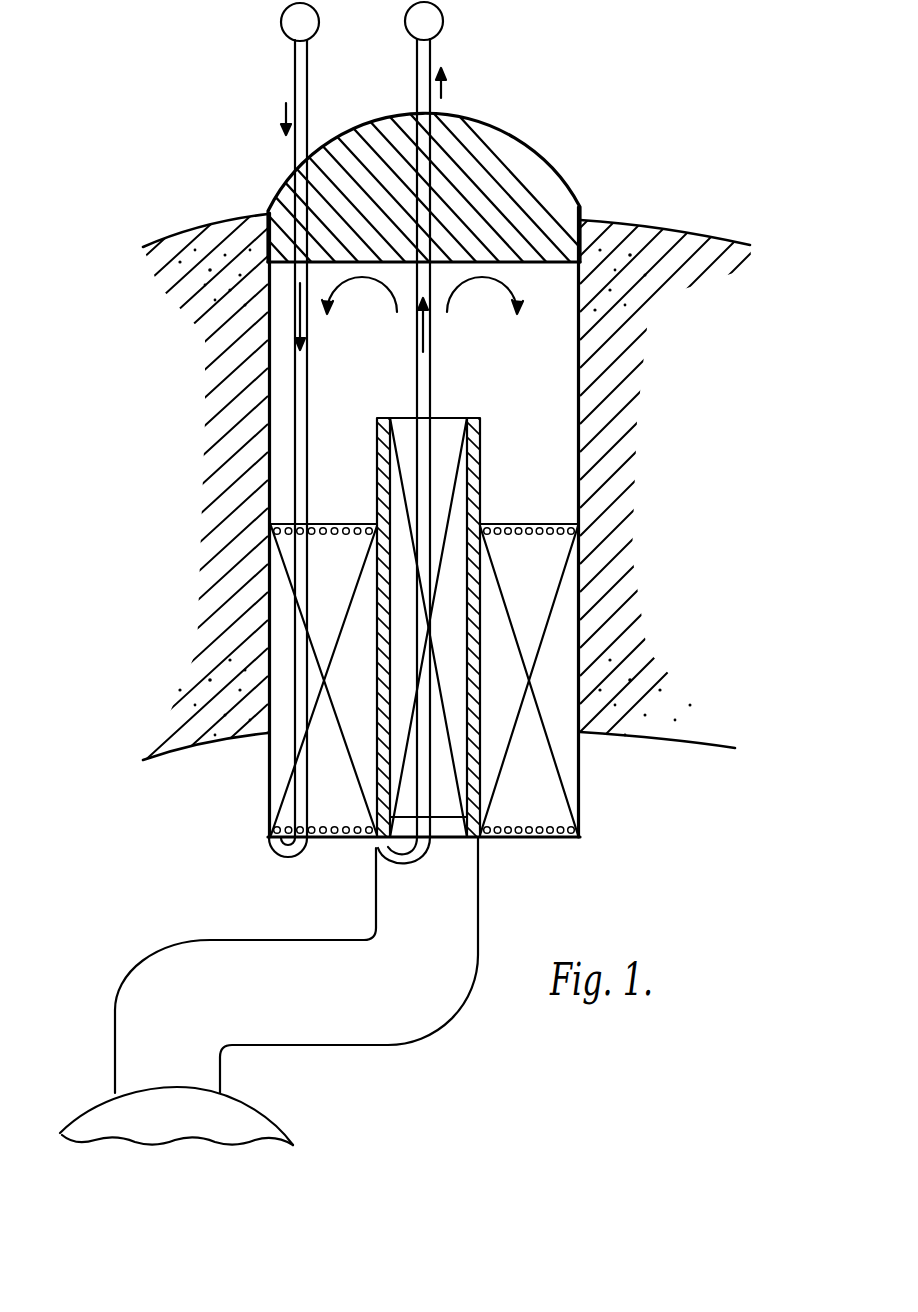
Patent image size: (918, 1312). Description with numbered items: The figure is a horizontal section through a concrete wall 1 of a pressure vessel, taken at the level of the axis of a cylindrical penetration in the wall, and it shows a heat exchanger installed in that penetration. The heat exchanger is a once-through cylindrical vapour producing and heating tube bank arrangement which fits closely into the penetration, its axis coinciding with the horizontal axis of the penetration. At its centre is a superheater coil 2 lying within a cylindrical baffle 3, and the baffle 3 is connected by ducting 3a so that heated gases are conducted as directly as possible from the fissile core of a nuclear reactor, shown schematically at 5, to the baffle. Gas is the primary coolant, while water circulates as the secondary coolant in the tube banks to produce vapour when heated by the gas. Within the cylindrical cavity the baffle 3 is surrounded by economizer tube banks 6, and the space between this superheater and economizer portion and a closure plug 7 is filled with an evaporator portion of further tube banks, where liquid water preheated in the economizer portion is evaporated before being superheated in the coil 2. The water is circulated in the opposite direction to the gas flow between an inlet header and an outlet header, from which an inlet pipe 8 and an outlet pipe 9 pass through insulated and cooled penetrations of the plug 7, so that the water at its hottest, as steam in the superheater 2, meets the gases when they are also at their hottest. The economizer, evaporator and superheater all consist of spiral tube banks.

The concrete wall 1 is at (214, 242).
The central superheater coil 2 is at (448, 812).
The cylindrical baffle 3 is at (481, 691).
The ducting 3a is at (240, 939).
The fissile core of a nuclear reactor 5 is at (107, 1115).
The economizer tube banks 6 is at (338, 597).
The closure plug 7 is at (520, 158).
The inlet pipe 8 is at (307, 77).
The outlet pipe 9 is at (432, 52).